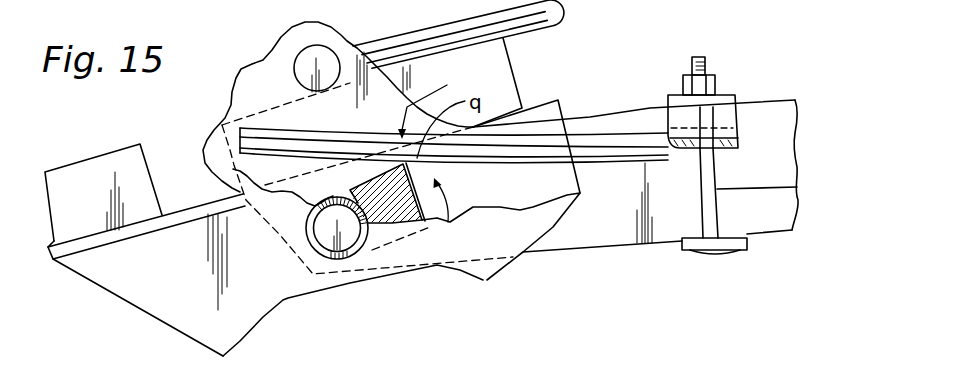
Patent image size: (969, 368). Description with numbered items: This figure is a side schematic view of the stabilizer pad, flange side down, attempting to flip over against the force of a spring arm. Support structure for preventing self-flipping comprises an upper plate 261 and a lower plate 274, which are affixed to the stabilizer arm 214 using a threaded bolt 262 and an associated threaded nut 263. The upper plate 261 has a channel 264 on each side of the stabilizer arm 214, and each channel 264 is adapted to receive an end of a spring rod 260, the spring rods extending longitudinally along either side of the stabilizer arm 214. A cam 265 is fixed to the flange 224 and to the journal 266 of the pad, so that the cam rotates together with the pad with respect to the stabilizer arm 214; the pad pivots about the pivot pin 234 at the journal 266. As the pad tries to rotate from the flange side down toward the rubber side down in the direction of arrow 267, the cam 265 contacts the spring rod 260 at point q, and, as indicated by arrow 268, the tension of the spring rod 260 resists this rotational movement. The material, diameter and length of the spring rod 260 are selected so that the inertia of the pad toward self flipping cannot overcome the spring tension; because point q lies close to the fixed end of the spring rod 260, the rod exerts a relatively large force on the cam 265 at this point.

The flange 224 is at (153, 301).
The journal 266 is at (316, 252).
The pivot pin 234 is at (346, 262).
The cam 265 is at (396, 224).
The arrow 267 is at (445, 205).
The arrow 268 is at (444, 101).
The spring rod 260 is at (593, 136).
The threaded nut 263 is at (712, 73).
The upper plate 261 is at (735, 91).
The channel 264 is at (797, 105).
The threaded bolt 262 is at (799, 189).
The stabilizer arm 214 is at (782, 206).
The lower plate 274 is at (748, 240).